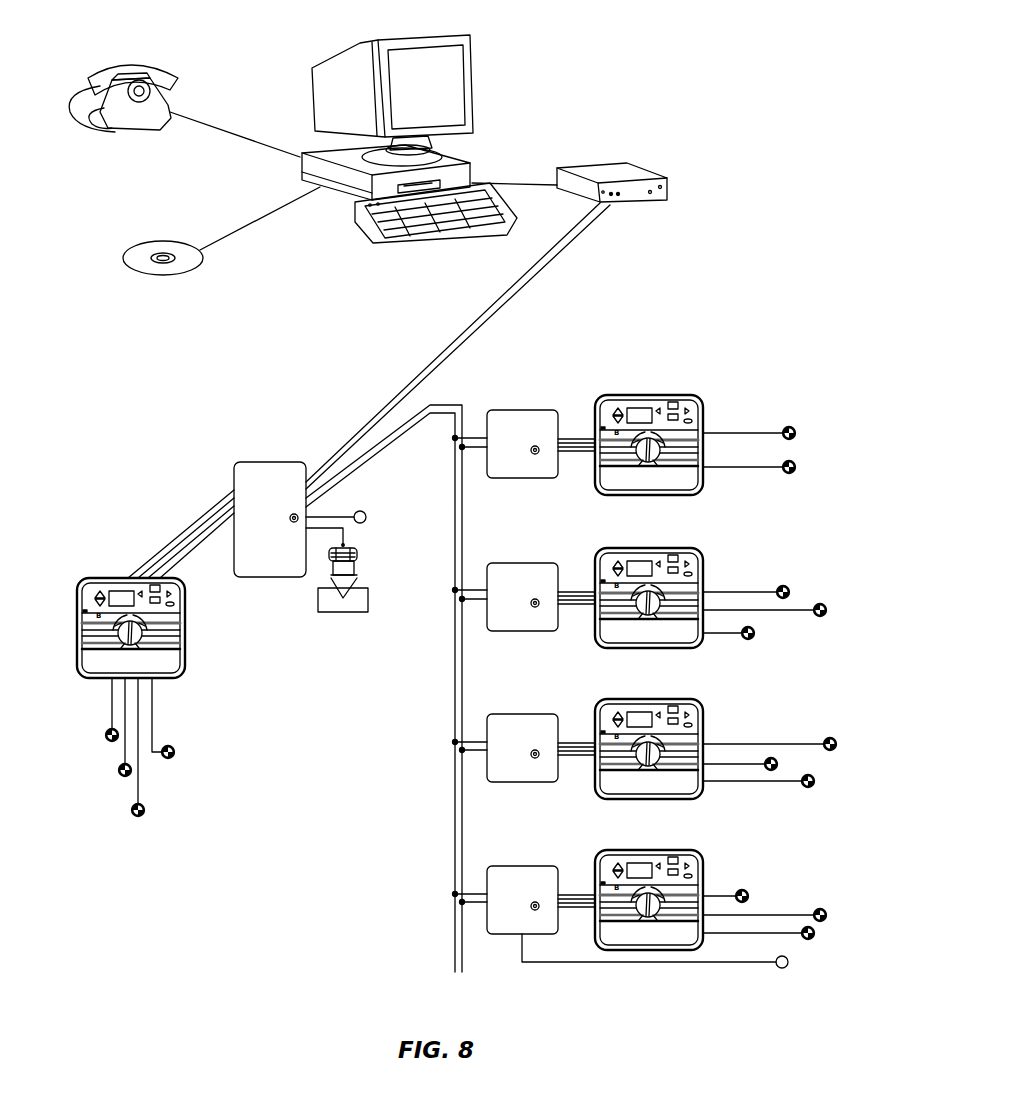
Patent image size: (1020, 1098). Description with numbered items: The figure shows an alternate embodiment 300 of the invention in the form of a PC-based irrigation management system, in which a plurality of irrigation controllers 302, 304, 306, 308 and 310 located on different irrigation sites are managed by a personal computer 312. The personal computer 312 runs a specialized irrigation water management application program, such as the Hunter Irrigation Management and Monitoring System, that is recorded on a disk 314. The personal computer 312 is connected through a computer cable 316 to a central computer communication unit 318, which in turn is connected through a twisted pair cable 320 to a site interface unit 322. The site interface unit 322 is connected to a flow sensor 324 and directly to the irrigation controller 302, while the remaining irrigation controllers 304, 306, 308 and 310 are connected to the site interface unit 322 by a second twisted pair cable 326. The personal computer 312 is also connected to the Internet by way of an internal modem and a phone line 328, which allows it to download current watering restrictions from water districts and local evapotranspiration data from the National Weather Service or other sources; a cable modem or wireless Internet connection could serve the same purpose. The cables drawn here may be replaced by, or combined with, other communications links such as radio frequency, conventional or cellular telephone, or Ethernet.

The alternate embodiment 300 is at (250, 911).
The irrigation controller 302 is at (186, 630).
The irrigation controller 304 is at (650, 395).
The irrigation controller 306 is at (650, 548).
The irrigation controller 308 is at (650, 699).
The irrigation controller 310 is at (650, 850).
The personal computer 312 is at (473, 83).
The disk 314 is at (165, 278).
The computer cable 316 is at (535, 177).
The central computer communication unit 318 is at (630, 169).
The twisted pair cable 320 is at (525, 285).
The site interface unit 322 is at (270, 462).
The flow sensor 324 is at (370, 600).
The twisted pair cable 326 is at (454, 652).
The phone line 328 is at (230, 130).